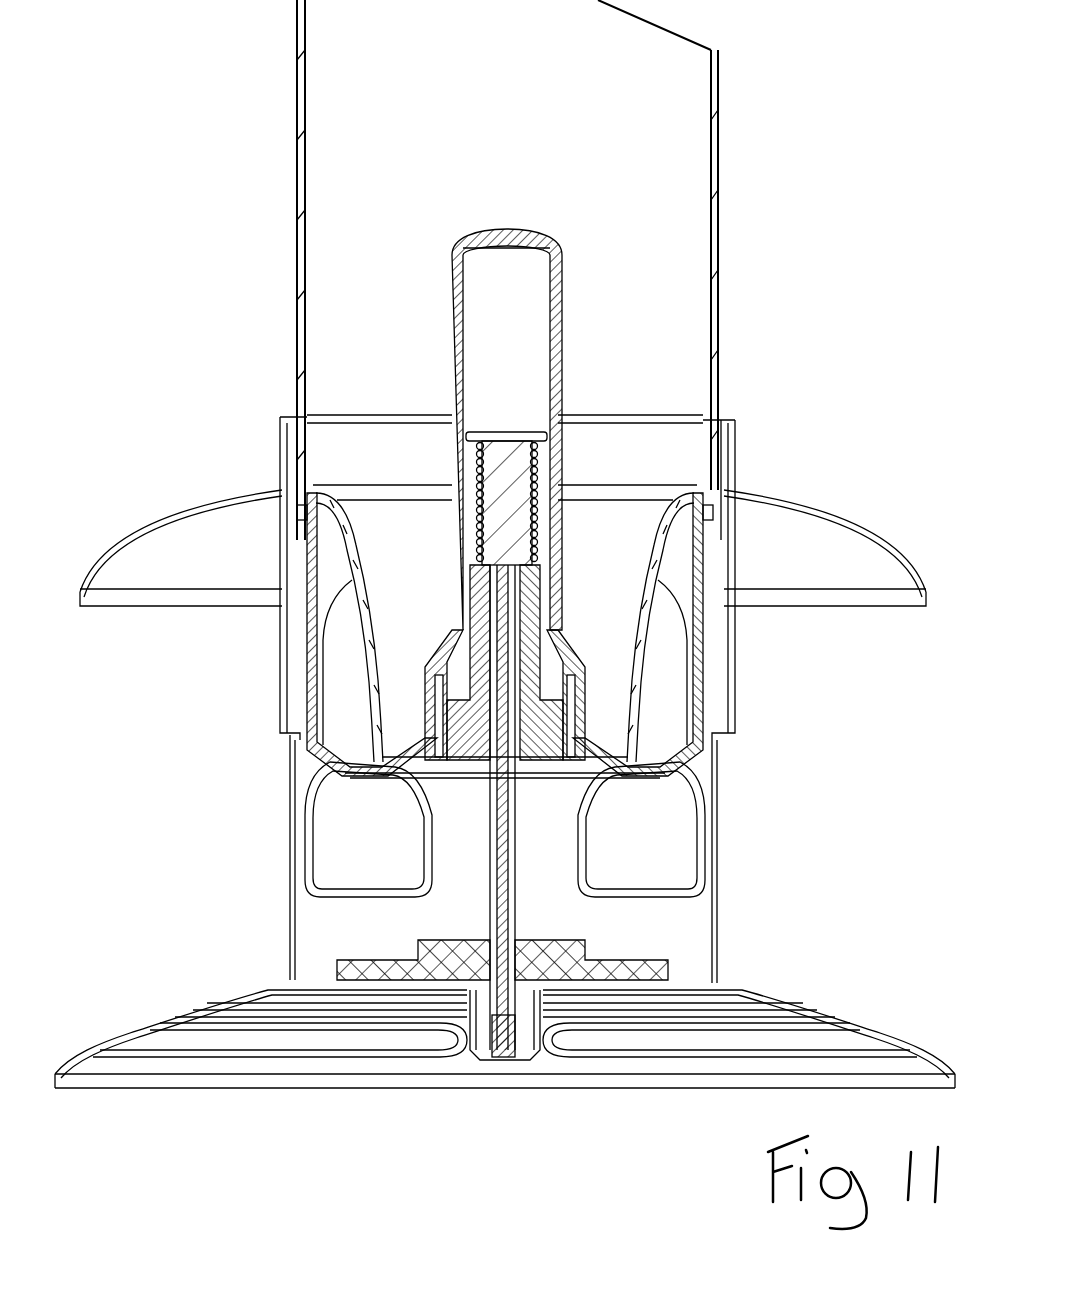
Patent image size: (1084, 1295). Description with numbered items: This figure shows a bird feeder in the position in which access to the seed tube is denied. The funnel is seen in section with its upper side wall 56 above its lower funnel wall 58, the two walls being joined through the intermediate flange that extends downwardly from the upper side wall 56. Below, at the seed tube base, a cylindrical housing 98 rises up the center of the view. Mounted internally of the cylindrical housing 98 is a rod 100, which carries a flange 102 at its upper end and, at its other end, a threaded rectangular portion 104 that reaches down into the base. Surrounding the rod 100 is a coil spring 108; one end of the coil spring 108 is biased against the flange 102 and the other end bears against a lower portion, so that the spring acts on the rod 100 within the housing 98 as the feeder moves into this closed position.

The upper side wall 56 is at (700, 478).
The lower funnel wall 58 is at (653, 562).
The cylindrical housing 98 is at (562, 313).
The rod 100 is at (502, 887).
The flange 102 is at (523, 430).
The threaded rectangular portion 104 is at (500, 1023).
The coil spring 108 is at (540, 455).